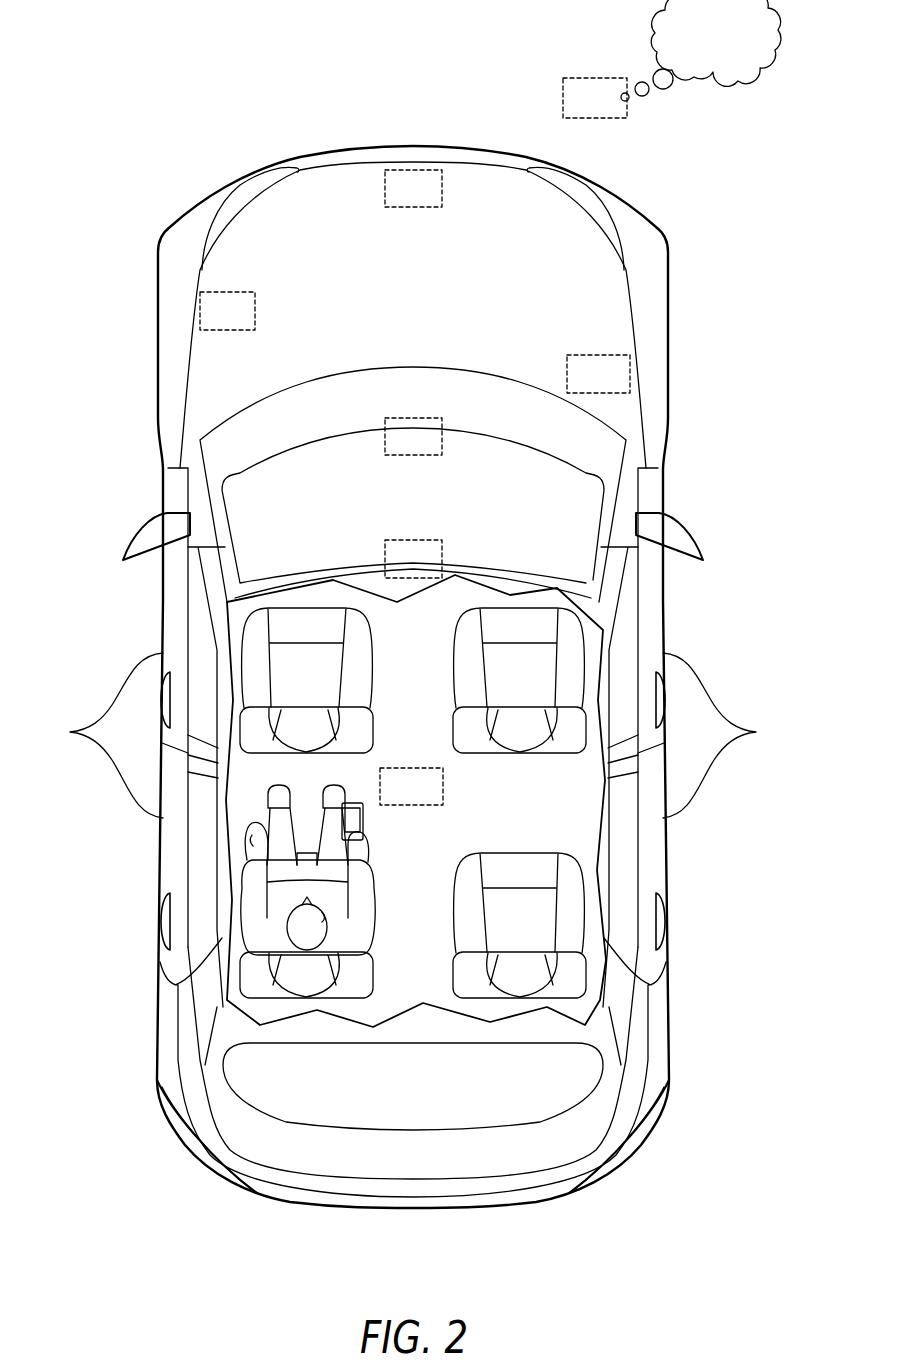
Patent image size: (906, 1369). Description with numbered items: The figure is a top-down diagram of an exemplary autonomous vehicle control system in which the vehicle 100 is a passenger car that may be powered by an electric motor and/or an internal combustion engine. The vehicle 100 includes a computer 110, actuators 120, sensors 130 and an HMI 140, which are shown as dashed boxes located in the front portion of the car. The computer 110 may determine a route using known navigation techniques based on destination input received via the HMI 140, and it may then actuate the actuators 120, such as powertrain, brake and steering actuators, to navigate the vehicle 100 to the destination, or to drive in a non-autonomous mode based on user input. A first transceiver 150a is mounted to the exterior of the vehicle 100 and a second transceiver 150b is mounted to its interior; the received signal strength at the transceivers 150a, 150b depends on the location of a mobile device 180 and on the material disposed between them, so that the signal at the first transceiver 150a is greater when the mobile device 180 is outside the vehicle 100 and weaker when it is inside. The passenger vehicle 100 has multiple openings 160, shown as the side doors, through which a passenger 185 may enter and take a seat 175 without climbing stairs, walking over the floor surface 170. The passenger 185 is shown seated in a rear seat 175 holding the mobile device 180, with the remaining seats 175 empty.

The vehicle 100 is at (670, 328).
The computer 110 is at (227, 311).
The actuators 120 is at (413, 188).
The sensors 130 is at (413, 559).
The HMI 140 is at (413, 436).
The first transceiver 150a is at (598, 374).
The second transceiver 150b is at (411, 786).
The openings 160 is at (66, 732).
The floor surface 170 is at (716, 43).
The seat 175 is at (240, 642).
The mobile device 180 is at (364, 822).
The passenger 185 is at (250, 895).